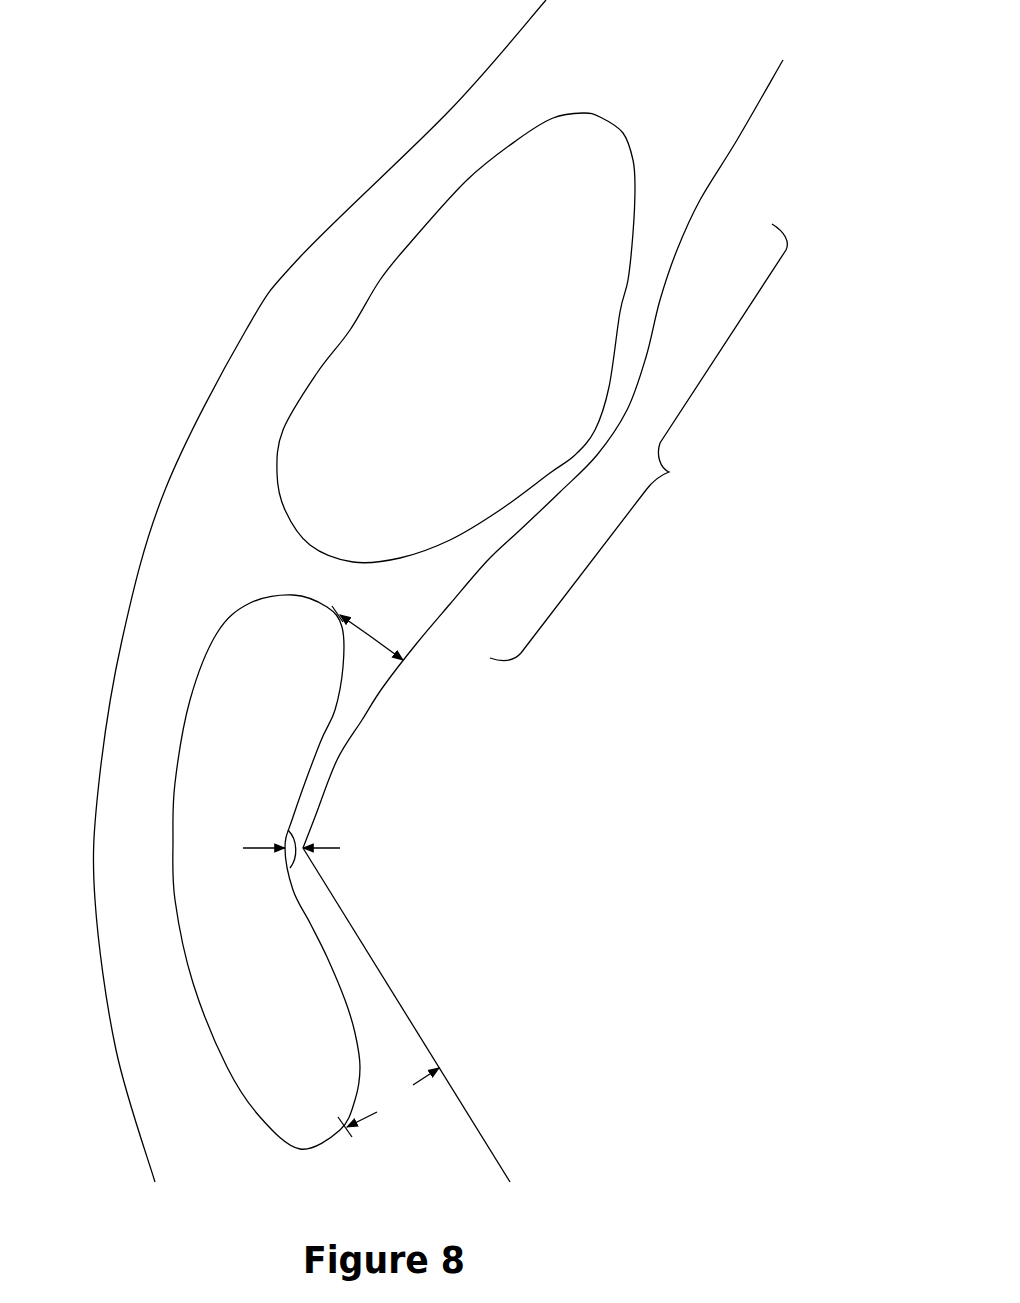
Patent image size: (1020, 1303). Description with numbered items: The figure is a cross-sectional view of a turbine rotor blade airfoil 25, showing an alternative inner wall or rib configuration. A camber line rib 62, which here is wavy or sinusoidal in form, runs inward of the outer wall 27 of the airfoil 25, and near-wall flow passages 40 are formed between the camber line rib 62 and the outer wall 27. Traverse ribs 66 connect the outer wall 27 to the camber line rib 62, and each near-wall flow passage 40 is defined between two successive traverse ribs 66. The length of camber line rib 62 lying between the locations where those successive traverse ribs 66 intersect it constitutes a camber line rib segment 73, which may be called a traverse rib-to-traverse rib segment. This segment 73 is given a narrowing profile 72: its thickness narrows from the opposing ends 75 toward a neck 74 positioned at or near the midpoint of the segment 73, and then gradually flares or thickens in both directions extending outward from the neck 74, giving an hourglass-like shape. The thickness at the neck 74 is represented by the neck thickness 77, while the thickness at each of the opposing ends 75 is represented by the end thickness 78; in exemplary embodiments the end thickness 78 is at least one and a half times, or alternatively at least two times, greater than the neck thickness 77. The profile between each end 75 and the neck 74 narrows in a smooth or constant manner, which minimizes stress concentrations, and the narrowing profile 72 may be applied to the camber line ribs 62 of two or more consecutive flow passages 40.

The airfoil 25 is at (170, 386).
The outer wall 27 is at (331, 308).
The flow passage 40 is at (453, 388).
The camber line rib 62 is at (657, 243).
The traverse rib 66 is at (666, 105).
The narrowing profile 72 is at (410, 889).
The camber line rib segment 73 is at (638, 442).
The neck 74 is at (590, 445).
The opposing ends 75 is at (684, 182).
The neck thickness 77 is at (290, 830).
The end thickness 78 is at (370, 633).